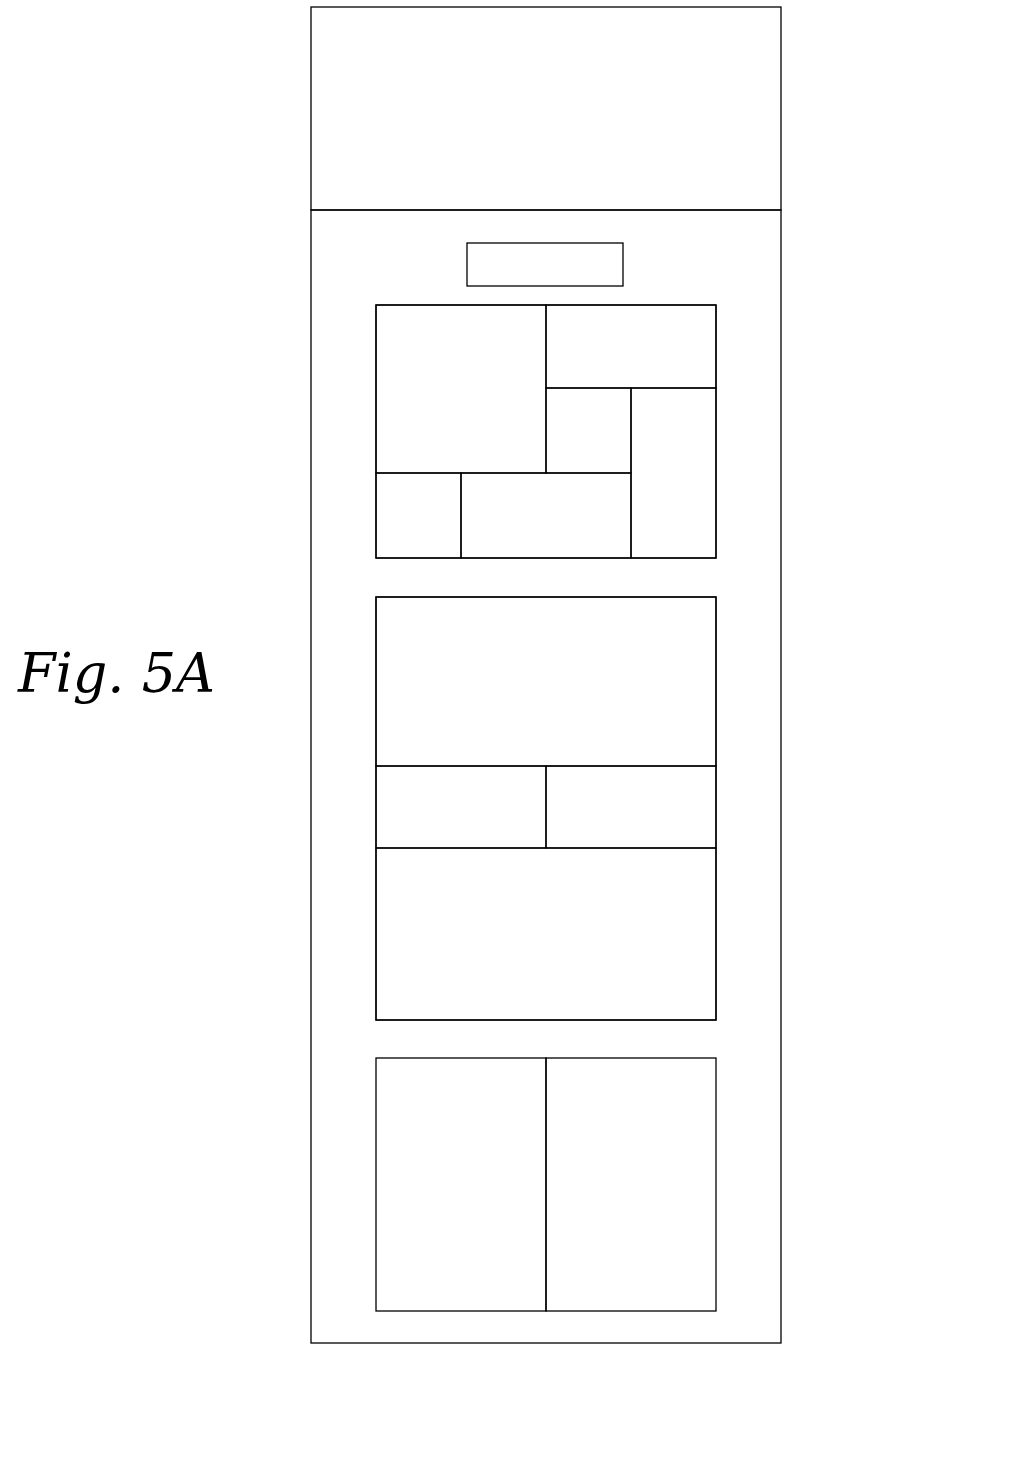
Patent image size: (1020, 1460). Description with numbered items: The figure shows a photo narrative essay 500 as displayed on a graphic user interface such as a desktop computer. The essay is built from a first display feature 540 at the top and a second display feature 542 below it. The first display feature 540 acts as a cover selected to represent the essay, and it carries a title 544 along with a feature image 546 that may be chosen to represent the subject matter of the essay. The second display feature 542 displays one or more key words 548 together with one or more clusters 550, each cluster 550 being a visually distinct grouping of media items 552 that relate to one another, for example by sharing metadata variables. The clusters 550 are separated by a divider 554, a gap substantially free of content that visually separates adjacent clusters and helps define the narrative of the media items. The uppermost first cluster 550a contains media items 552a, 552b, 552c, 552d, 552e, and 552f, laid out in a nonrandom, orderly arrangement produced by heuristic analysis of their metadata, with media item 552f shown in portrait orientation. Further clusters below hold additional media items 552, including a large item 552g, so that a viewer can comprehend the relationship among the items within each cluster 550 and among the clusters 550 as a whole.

The photo narrative essay 500 is at (191, 106).
The first display feature 540 is at (785, 112).
The second display feature 542 is at (785, 260).
The title 544 is at (447, 172).
The feature image 546 is at (529, 106).
The key words 548 is at (466, 263).
The cluster 550 is at (626, 954).
The first cluster 550a is at (633, 431).
The media item 552 is at (432, 821).
The media item 552a is at (431, 396).
The media item 552b is at (601, 351).
The media item 552c is at (388, 524).
The media item 552d is at (560, 437).
The media item 552e is at (516, 524).
The media item 552f is at (645, 479).
The image cell g 552g is at (518, 694).
The divider 554 is at (722, 579).